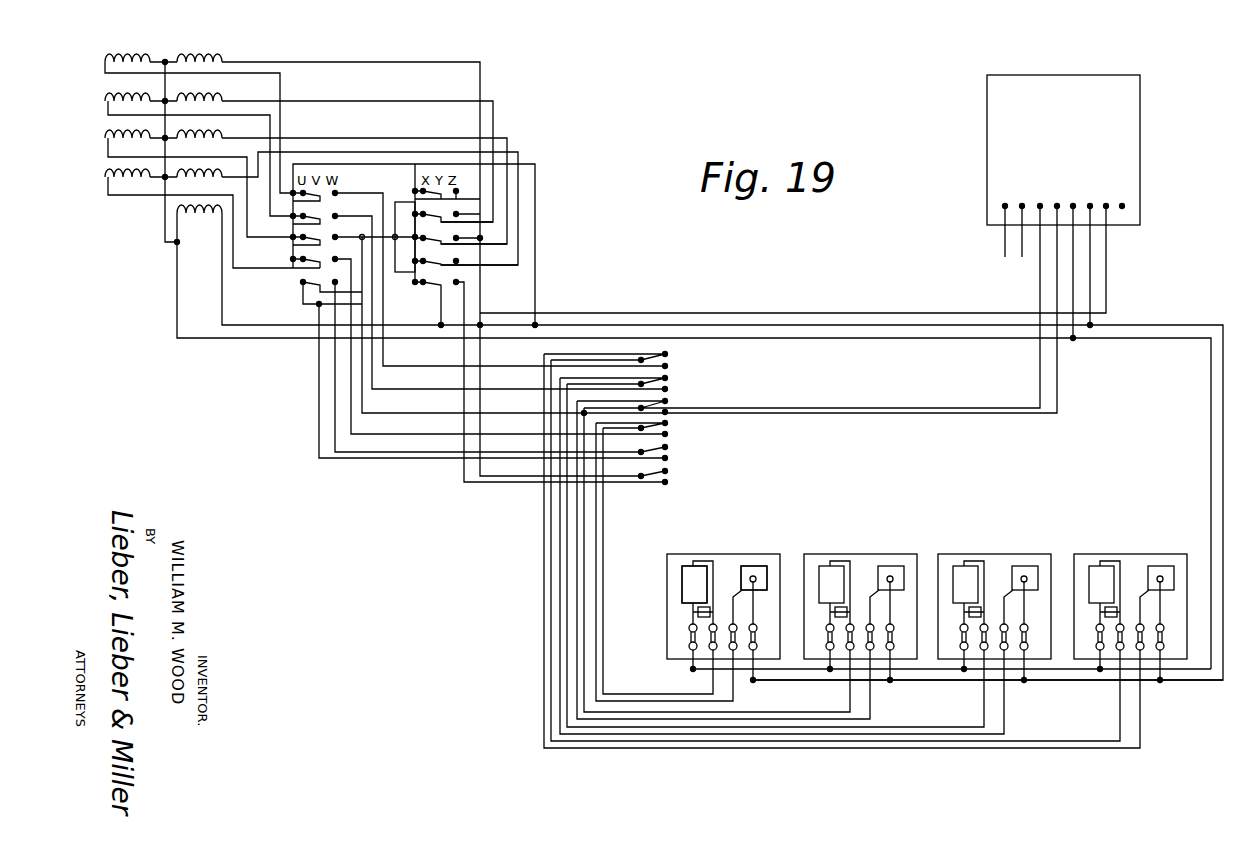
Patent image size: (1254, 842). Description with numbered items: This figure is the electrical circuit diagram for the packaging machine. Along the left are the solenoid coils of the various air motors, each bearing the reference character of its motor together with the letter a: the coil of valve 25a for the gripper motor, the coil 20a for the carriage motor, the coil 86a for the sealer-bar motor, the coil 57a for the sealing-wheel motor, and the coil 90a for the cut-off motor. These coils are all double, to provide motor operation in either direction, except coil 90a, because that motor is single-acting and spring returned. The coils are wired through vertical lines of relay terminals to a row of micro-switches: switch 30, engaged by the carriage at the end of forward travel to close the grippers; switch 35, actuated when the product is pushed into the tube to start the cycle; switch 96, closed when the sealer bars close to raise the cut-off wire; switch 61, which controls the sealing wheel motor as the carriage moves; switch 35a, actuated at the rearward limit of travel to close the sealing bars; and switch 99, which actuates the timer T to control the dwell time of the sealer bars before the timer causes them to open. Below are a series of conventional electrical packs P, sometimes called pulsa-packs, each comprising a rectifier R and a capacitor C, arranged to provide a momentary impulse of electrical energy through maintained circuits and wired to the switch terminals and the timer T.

The solenoid-operated valve 25a is at (108, 59).
The solenoid coil of motor 20 20a is at (108, 98).
The solenoid coil of motor 86 86a is at (108, 141).
The solenoid coil of motor 57 57a is at (108, 180).
The solenoid coil of motor 90 90a is at (172, 215).
The micro-switch 30 is at (669, 357).
The micro-switch 35 is at (669, 381).
The micro-switch 96 is at (669, 404).
The micro-switch 61 is at (669, 426).
The micro-switch 35a is at (669, 450).
The micro-switch 99 is at (669, 474).
The timer T is at (990, 117).
The electrical pack P is at (933, 596).
The capacitor C is at (690, 587).
The rectifier R is at (758, 599).